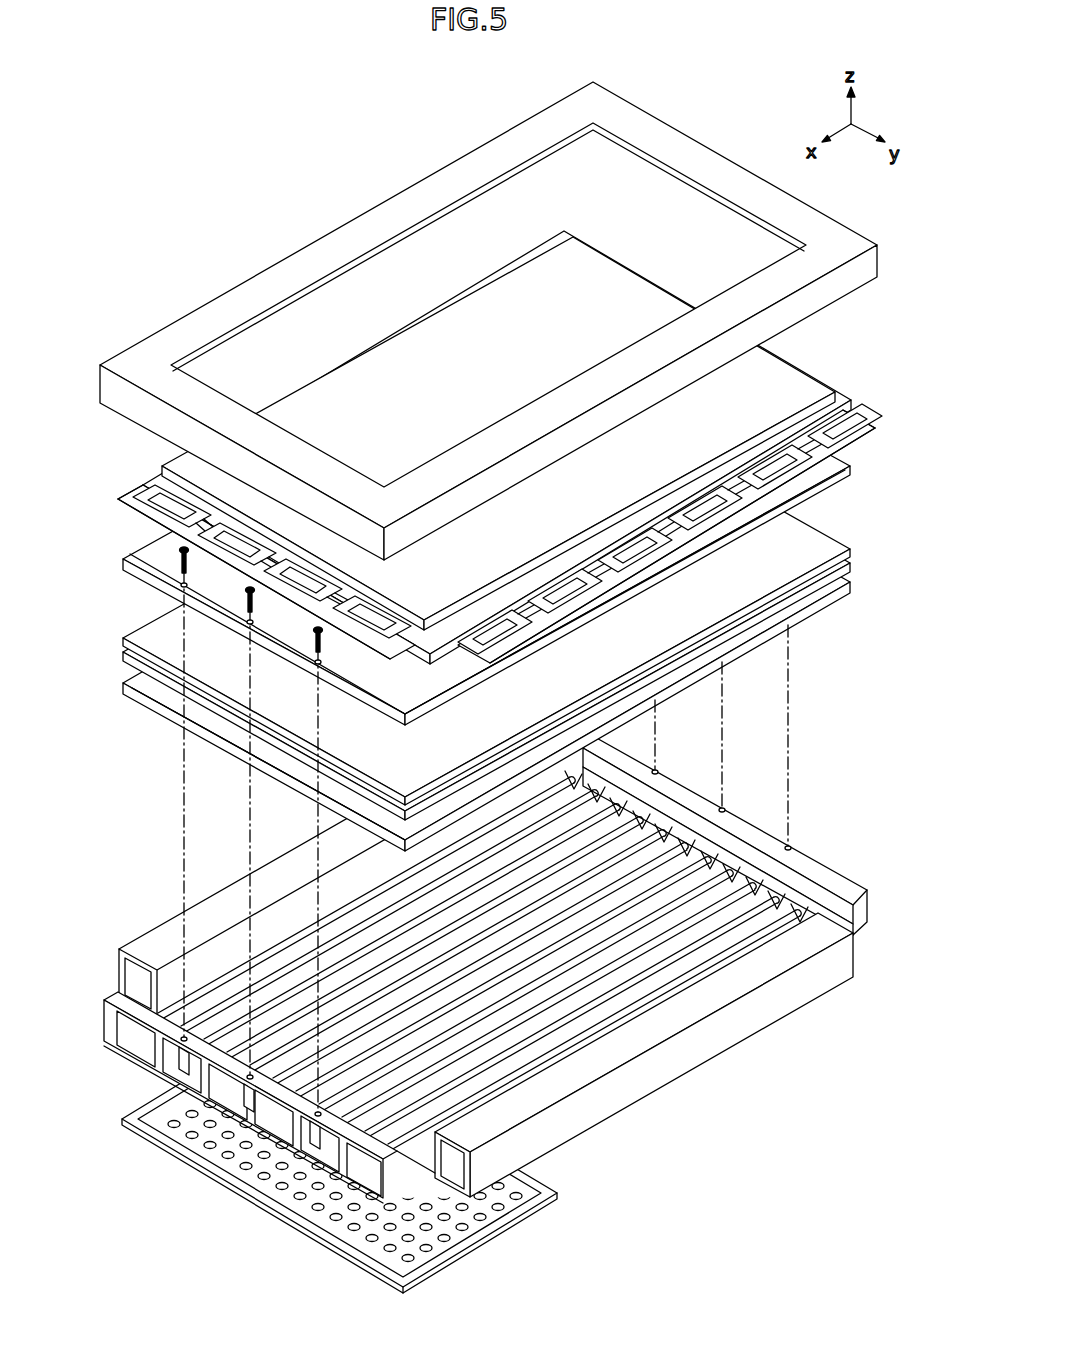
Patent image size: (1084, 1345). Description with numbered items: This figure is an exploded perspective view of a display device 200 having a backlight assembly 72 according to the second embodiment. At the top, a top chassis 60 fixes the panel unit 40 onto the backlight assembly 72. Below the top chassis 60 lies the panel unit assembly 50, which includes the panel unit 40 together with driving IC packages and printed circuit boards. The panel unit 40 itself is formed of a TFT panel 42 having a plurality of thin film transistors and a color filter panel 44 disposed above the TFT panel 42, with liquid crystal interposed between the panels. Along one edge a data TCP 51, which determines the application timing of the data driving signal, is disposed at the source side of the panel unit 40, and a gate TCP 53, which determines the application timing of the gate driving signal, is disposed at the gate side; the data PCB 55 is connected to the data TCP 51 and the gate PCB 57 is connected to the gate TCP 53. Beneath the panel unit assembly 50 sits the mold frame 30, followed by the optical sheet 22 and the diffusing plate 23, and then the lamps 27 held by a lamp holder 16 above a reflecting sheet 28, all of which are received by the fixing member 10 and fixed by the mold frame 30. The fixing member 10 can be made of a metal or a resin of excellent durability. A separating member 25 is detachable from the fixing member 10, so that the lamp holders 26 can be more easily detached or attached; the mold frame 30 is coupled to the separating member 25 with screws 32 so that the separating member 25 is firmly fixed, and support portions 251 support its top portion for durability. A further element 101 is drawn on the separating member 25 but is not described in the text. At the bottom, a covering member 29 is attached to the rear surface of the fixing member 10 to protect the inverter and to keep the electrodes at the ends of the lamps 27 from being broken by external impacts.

The fixing member 10 is at (119, 965).
The lamp holder 16 is at (722, 865).
The optical sheet 22 is at (852, 545).
The diffusing plate 23 is at (855, 590).
The separating member 25 is at (230, 1139).
The lamp holders 26 is at (140, 1040).
The lamp 27 is at (560, 1035).
The reflecting sheet 28 is at (210, 1000).
The covering member 29 is at (505, 1225).
The mold frame 30 is at (855, 470).
The screws 32 is at (179, 560).
The panel unit 40 is at (491, 446).
The TFT panel 42 is at (848, 398).
The color filter panel 44 is at (812, 374).
The panel unit assembly 50 is at (491, 511).
The data TCP 51 is at (864, 442).
The gate TCP 53 is at (152, 526).
The data PCB 55 is at (870, 421).
The gate PCB 57 is at (118, 508).
The top chassis 60 is at (722, 150).
The backlight assembly 72 is at (905, 463).
The socket terminal 101 is at (318, 1165).
The display device 200 is at (364, 176).
The support portions 251 is at (268, 1130).